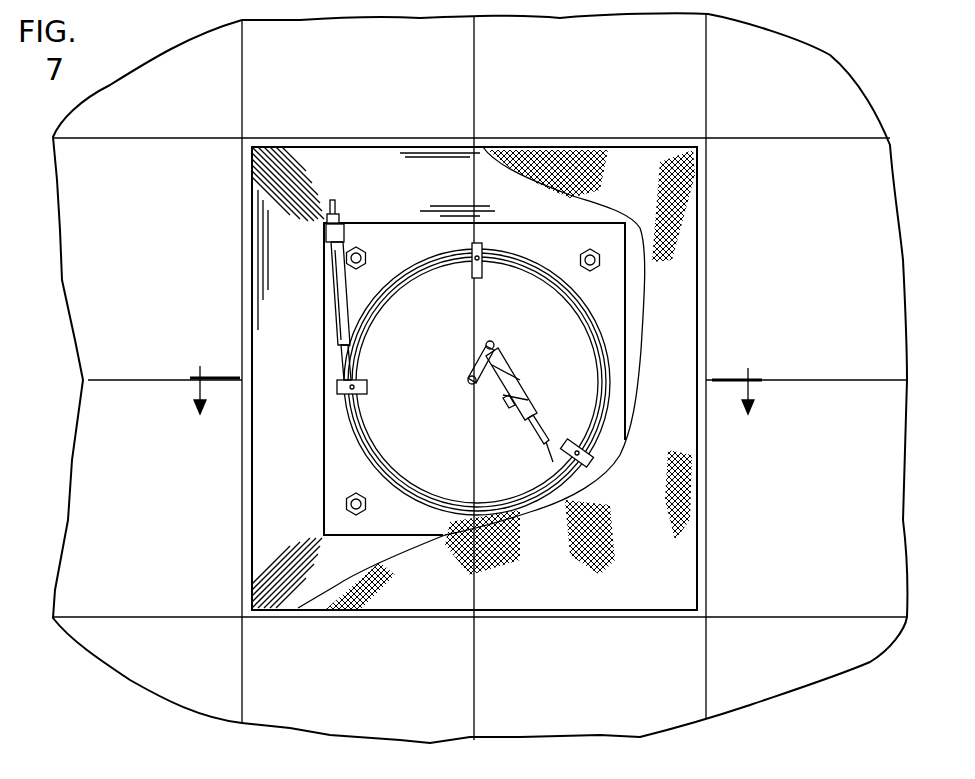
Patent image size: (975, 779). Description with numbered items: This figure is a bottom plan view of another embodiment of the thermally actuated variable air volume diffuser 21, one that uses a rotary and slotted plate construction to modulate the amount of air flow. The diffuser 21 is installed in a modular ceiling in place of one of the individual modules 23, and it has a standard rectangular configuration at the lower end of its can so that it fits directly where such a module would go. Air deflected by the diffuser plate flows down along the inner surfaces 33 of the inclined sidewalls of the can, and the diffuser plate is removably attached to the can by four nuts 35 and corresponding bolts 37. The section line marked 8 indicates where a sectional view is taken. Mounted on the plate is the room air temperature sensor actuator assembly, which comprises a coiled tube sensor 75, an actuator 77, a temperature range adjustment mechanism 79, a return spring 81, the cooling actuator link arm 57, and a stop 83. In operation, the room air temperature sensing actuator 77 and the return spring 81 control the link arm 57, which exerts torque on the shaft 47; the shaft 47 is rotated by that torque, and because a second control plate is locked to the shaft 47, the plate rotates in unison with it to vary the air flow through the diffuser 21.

The diffuser 21 is at (551, 105).
The individual modules 23 is at (825, 502).
The inner surfaces 33 is at (488, 193).
The nuts 35 is at (362, 250).
The bolts 37 is at (362, 256).
The shaft 47 is at (469, 383).
The cooling actuator link arm 57 is at (480, 366).
The coiled tube sensor 75 is at (388, 316).
The actuator 77 is at (524, 412).
The temperature range adjustment mechanism 79 is at (338, 268).
The return spring 81 is at (507, 410).
The stop 83 is at (494, 344).
The section line 8 is at (476, 405).